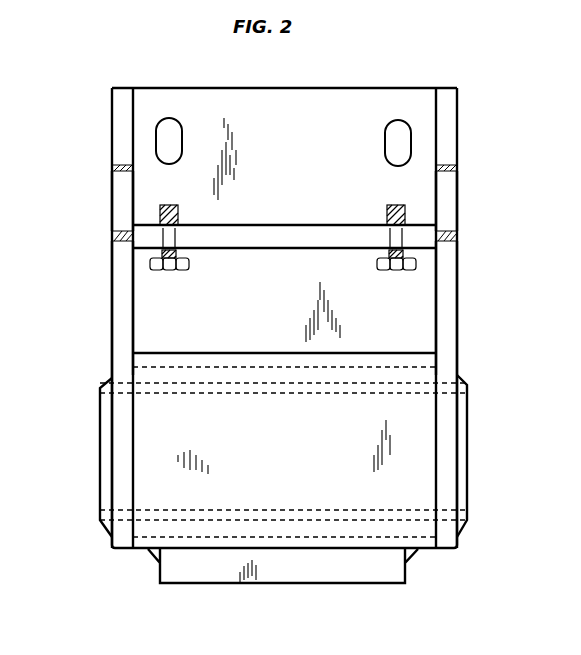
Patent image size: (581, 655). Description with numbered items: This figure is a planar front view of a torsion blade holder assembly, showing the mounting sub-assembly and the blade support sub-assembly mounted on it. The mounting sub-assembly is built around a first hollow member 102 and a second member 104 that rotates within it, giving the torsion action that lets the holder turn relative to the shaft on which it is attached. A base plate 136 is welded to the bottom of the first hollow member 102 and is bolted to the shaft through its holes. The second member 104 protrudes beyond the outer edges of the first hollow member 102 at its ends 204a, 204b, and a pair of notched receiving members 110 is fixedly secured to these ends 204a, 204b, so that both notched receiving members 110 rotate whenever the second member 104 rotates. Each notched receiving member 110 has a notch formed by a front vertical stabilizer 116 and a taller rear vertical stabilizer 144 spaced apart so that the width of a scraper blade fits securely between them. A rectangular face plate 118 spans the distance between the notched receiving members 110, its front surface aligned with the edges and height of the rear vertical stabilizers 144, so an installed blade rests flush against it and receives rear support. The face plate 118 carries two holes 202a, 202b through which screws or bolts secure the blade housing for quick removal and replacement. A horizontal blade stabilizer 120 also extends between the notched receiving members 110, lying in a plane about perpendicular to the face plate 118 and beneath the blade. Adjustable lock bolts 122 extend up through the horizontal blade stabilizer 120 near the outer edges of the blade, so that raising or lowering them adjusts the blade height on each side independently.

The first hollow member 102 is at (296, 471).
The second member 104 is at (100, 480).
The notched receiving members 110 is at (105, 272).
The front vertical stabilizer 116 is at (120, 197).
The face plate 118 is at (280, 108).
The horizontal blade stabilizer 120 is at (430, 237).
The adjustable lock bolts 122 is at (164, 270).
The base plate 136 is at (296, 565).
The rear vertical stabilizer 144 is at (120, 125).
The hole in face plate 202a is at (169, 118).
The hole in face plate 202b is at (398, 120).
The end of second member 204a is at (108, 425).
The end of second member 204b is at (460, 430).